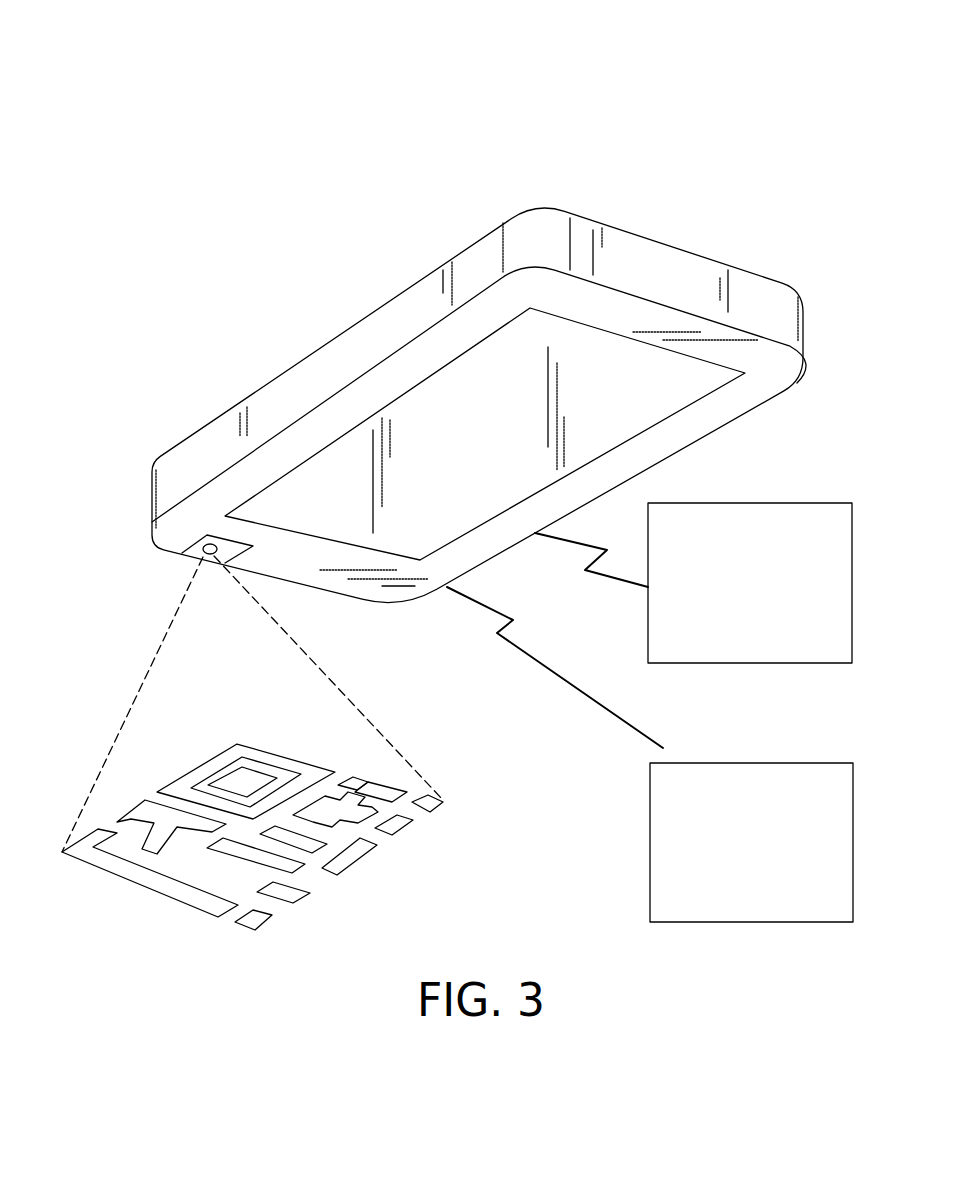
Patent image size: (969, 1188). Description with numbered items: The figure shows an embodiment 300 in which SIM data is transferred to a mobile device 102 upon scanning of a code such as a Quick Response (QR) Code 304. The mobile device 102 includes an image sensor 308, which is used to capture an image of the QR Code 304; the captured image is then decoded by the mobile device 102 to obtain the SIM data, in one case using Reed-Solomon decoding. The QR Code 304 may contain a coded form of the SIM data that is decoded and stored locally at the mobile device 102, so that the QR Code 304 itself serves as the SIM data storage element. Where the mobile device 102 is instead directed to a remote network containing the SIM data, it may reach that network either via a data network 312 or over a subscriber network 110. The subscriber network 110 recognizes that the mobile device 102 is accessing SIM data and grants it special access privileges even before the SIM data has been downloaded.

The embodiment 300 is at (573, 100).
The mobile device 102 is at (610, 225).
The subscriber network 110 is at (727, 503).
The data network 312 is at (731, 763).
The Quick Response (QR) Code 304 is at (444, 781).
The image sensor 308 is at (192, 553).